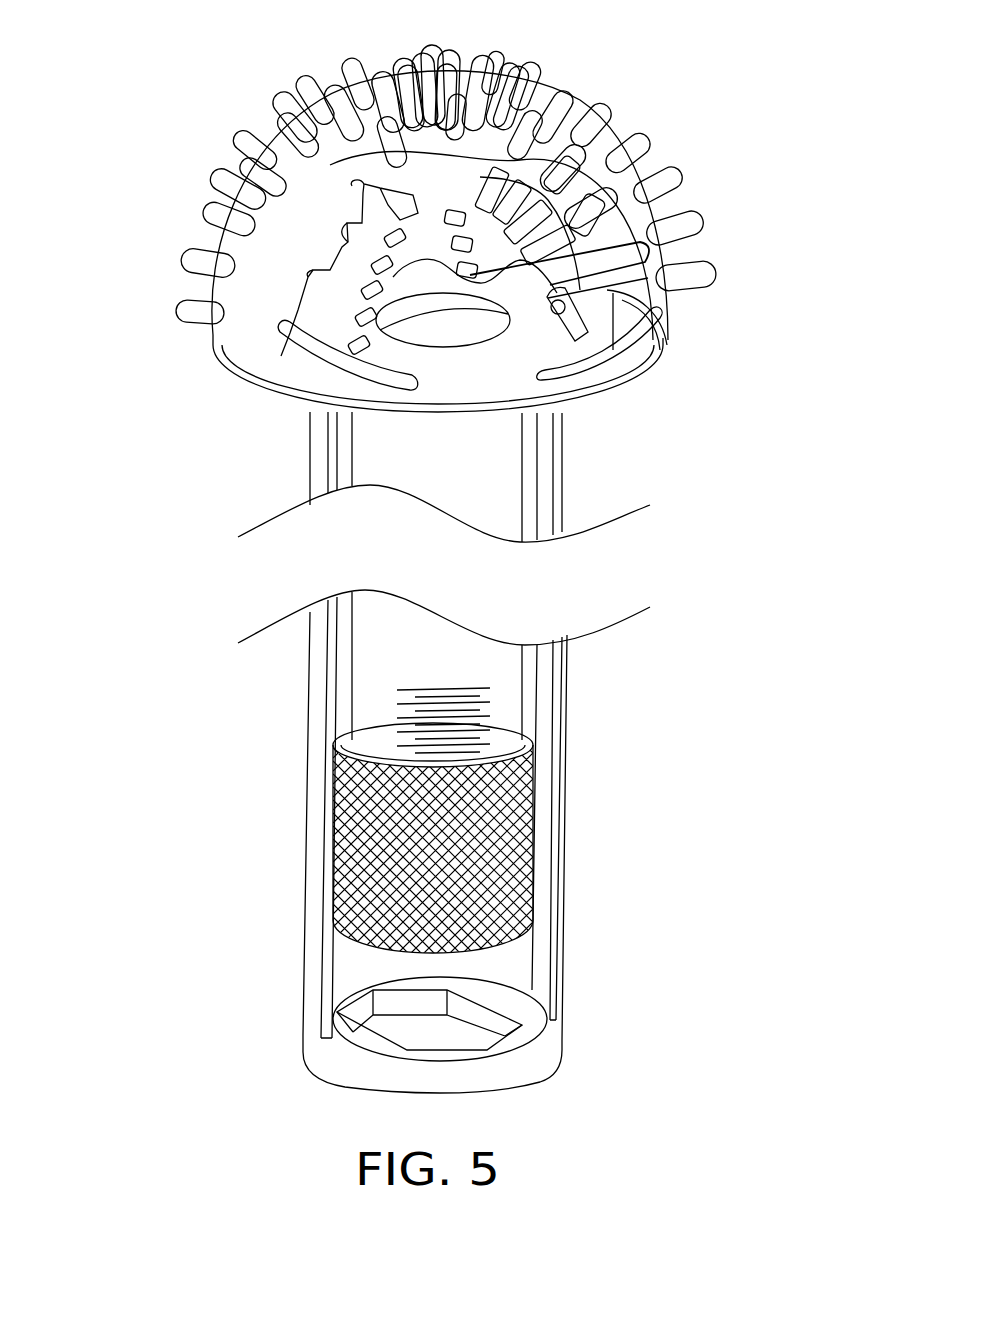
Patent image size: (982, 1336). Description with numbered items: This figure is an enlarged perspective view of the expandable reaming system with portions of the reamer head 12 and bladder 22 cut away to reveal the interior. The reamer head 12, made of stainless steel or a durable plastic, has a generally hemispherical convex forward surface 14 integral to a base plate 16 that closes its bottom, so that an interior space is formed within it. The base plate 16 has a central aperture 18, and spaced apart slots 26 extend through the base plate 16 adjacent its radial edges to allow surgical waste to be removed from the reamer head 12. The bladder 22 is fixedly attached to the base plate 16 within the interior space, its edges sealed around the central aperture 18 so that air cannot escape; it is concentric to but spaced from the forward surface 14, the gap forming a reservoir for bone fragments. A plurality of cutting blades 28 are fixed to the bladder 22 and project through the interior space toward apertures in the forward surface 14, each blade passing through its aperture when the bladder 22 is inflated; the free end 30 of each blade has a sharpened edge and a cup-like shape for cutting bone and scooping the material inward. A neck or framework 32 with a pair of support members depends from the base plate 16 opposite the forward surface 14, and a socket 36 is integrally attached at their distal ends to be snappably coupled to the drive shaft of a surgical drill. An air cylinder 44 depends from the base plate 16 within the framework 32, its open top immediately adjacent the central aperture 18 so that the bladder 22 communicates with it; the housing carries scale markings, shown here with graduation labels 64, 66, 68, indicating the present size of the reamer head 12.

The reamer head 12 is at (637, 80).
The forward surface 14 is at (213, 289).
The base plate 16 is at (480, 393).
The central aperture 18 is at (443, 334).
The bladder 22 is at (343, 340).
The slots 26 is at (353, 340).
The cutting blades 28 is at (667, 342).
The free end 30 is at (710, 278).
The framework 32 is at (292, 666).
The socket 36 is at (360, 1066).
The air cylinder 44 is at (521, 663).
The graduation mark 64 is at (454, 741).
The graduation mark 66 is at (454, 716).
The graduation mark 68 is at (454, 694).